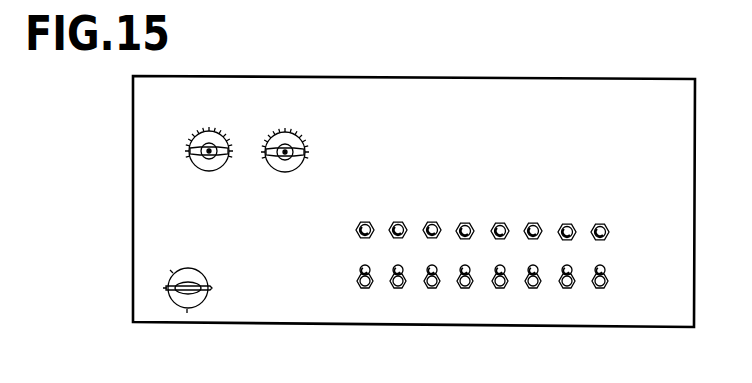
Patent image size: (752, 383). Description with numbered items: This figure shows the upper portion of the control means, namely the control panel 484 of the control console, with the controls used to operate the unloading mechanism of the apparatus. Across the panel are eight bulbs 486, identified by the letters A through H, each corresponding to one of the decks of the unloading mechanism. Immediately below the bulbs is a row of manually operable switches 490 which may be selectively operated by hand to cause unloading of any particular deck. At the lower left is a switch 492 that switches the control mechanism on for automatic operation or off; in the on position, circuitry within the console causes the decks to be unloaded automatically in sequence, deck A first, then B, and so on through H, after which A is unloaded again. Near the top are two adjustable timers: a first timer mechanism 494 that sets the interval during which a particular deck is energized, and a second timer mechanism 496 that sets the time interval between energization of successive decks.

The control panel 484 is at (478, 103).
The bulbs 486 is at (430, 216).
The manually operable switches 490 is at (431, 292).
The switch 492 is at (202, 268).
The first timer mechanism 494 is at (230, 112).
The second timer mechanism 496 is at (297, 130).